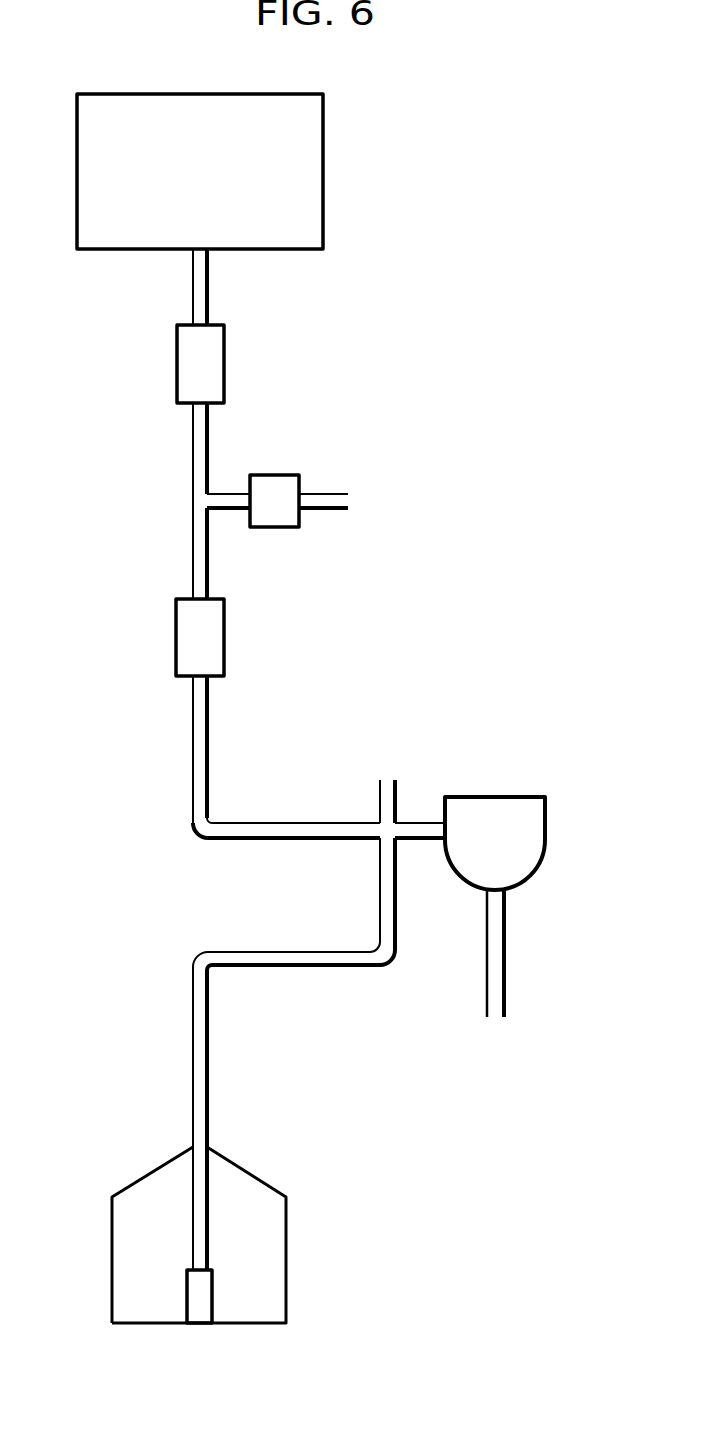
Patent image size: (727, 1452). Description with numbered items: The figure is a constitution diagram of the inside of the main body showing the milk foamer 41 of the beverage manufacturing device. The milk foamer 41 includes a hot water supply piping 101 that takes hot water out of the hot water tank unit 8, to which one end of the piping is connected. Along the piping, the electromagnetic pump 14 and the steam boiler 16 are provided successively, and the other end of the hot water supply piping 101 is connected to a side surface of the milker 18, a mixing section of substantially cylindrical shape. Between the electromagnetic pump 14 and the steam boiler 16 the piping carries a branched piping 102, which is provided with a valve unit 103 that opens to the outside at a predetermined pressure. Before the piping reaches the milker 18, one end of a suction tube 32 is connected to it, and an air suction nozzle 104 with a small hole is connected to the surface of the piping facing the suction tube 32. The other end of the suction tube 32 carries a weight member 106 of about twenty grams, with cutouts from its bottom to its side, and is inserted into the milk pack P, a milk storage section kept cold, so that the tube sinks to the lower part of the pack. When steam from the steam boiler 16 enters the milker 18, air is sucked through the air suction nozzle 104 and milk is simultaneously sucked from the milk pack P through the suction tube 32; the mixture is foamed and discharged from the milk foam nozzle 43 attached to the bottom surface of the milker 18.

The hot water tank unit 8 is at (325, 131).
The hot water supply piping 101 is at (209, 273).
The electromagnetic pump 14 is at (177, 352).
The valve unit 103 is at (274, 475).
The branched piping 102 is at (325, 494).
The steam boiler 16 is at (224, 625).
The milk foamer 41 is at (102, 686).
The air suction nozzle 104 is at (397, 782).
The milker 18 is at (547, 828).
The milk foam nozzle 43 is at (506, 977).
The suction tube 32 is at (273, 968).
The milk pack P is at (287, 1222).
The weight member 106 is at (213, 1290).